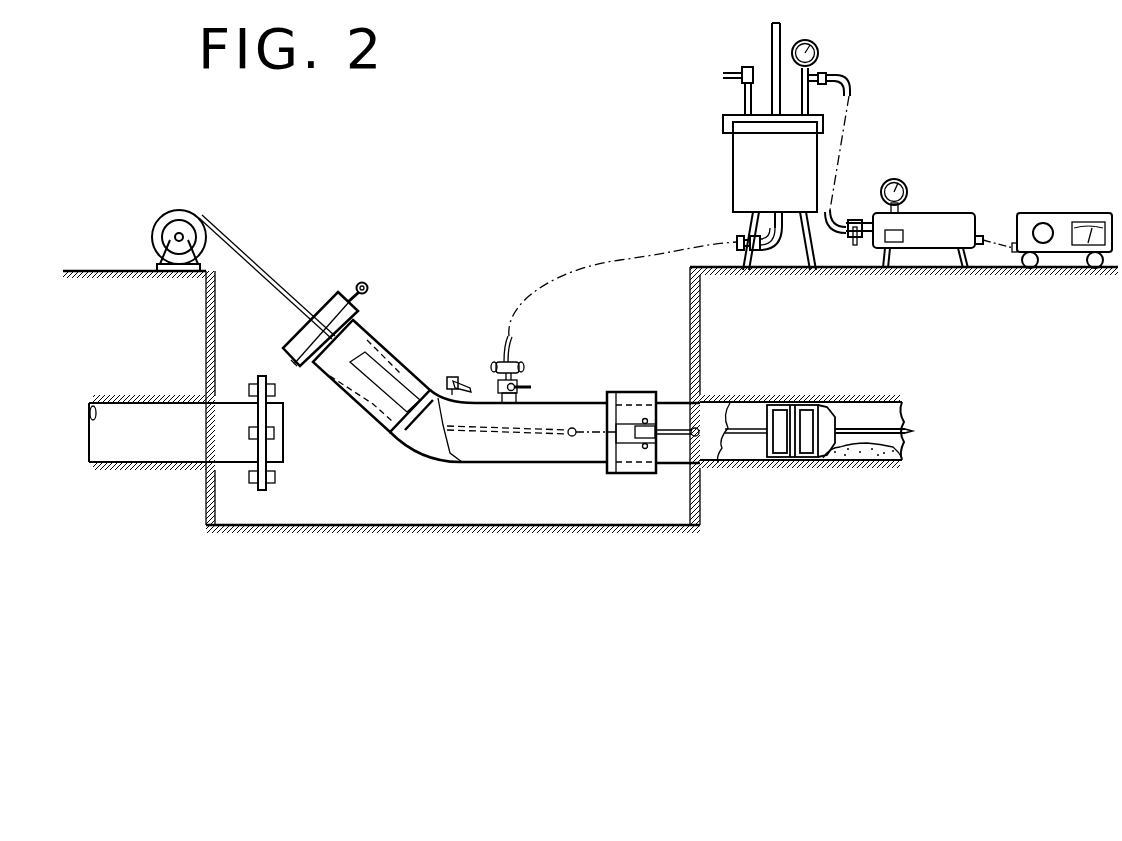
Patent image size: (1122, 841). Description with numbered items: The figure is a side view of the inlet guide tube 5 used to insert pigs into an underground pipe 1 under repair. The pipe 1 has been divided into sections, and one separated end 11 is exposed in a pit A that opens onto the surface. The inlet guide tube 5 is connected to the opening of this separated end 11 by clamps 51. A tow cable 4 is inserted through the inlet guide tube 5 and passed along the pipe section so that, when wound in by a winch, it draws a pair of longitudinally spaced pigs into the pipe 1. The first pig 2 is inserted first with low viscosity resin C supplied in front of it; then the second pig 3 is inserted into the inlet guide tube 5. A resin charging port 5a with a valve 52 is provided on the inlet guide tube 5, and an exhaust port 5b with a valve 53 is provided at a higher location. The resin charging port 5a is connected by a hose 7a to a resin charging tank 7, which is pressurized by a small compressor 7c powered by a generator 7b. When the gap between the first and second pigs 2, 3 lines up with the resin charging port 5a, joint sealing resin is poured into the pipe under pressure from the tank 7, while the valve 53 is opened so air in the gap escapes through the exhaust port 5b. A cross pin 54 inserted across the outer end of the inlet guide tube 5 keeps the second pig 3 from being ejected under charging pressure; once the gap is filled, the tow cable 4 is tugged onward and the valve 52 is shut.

The underground pipe 1 is at (152, 418).
The first pig 2 is at (808, 447).
The second pig 3 is at (390, 355).
The tow cable 4 is at (492, 428).
The inlet guide tube 5 is at (531, 455).
The resin charging port 5a is at (514, 402).
The exhaust port 5b is at (447, 390).
The clamps 51 is at (637, 392).
The valve 52 is at (530, 386).
The valve 53 is at (463, 387).
The cross pin 54 is at (369, 291).
The resin charging tank 7 is at (737, 167).
The hose 7a is at (622, 260).
The generator 7b is at (1060, 222).
The compressor 7c is at (940, 220).
The separated end 11 is at (677, 457).
The pit A is at (389, 504).
The low viscosity resin C is at (868, 462).